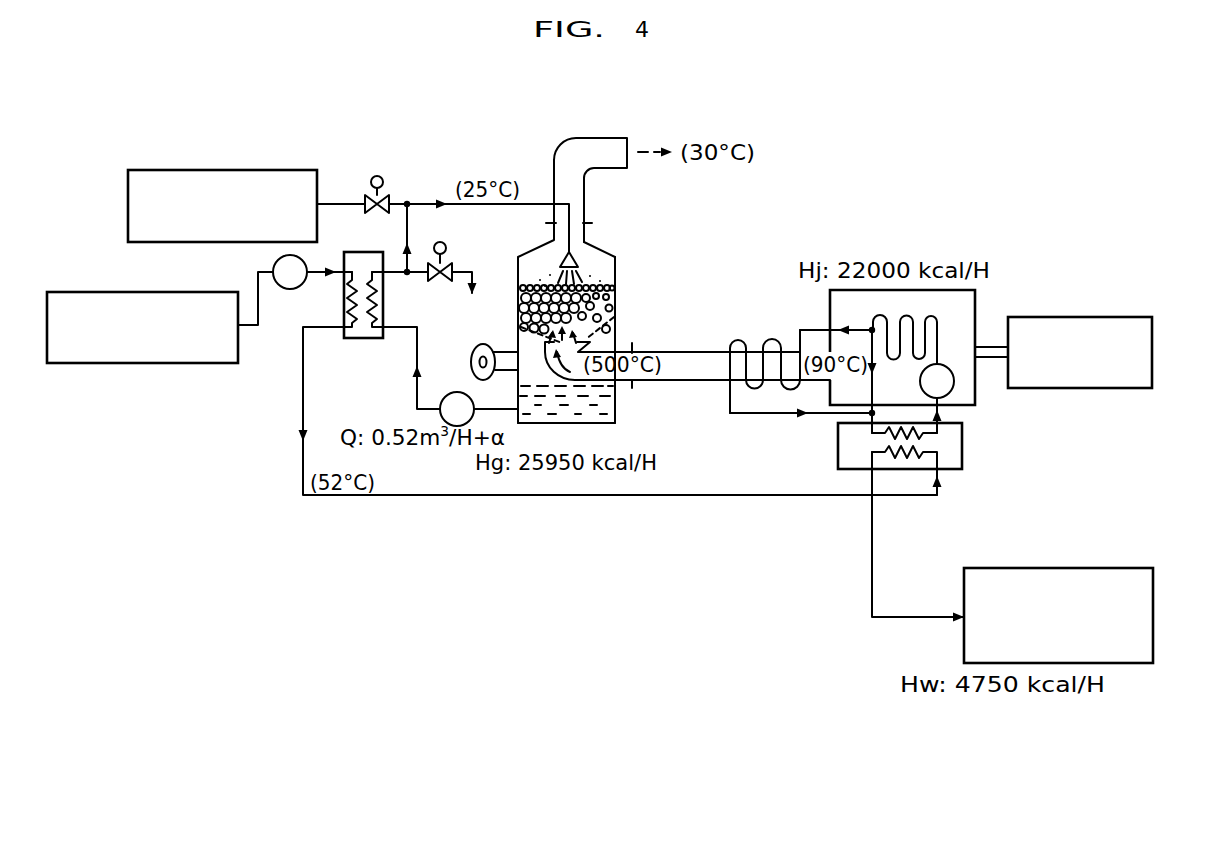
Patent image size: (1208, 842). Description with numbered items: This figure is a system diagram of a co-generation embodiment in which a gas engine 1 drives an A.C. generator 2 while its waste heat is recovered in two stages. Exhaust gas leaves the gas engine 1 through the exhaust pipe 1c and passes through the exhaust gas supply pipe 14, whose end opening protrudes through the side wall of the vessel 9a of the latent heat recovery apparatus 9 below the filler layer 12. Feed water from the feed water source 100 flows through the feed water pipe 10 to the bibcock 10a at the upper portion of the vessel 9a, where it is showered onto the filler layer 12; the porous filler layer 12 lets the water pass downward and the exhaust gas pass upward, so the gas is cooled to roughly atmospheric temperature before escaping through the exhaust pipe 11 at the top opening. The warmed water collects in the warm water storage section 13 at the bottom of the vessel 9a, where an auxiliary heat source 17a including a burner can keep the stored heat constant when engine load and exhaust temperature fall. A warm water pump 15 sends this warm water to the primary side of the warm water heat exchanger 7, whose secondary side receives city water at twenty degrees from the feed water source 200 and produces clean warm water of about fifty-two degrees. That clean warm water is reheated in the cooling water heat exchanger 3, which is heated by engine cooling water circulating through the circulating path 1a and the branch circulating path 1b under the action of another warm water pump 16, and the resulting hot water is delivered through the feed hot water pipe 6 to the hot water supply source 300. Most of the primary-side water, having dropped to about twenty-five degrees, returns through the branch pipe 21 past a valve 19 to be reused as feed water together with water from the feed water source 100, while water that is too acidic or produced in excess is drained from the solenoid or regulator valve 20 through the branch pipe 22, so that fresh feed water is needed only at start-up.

The feed water source 100 is at (256, 170).
The feed water source 200 is at (177, 292).
The valve 19 is at (377, 176).
The feed water pipe 10 is at (451, 203).
The branch pipe 21 is at (405, 229).
The branch pipe 22 is at (417, 273).
The solenoid valve or regulator valve 20 is at (443, 243).
The warm water heat exchanger 7 is at (344, 303).
The warm water pump 15 is at (457, 392).
The auxiliary heat source 17a is at (488, 344).
The latent heat recovery apparatus 9 is at (615, 243).
The vessel 9a is at (615, 270).
The exhaust pipe 11 is at (595, 138).
The bibcock 10a is at (582, 259).
The filler layer 12 is at (615, 300).
The exhaust gas supply pipe 14 is at (615, 385).
The warm water storage section 13 is at (615, 413).
The exhaust pipe 1c is at (755, 343).
The branch circulating path 1b is at (816, 330).
The gas engine 1 is at (976, 300).
The warm water pump 16 is at (943, 366).
The circulating path 1a is at (848, 399).
The A.C. generator 2 is at (1153, 320).
The cooling water heat exchanger 3 is at (963, 460).
The feed hot water pipe 6 is at (872, 535).
The hot water supply source 300 is at (1077, 568).